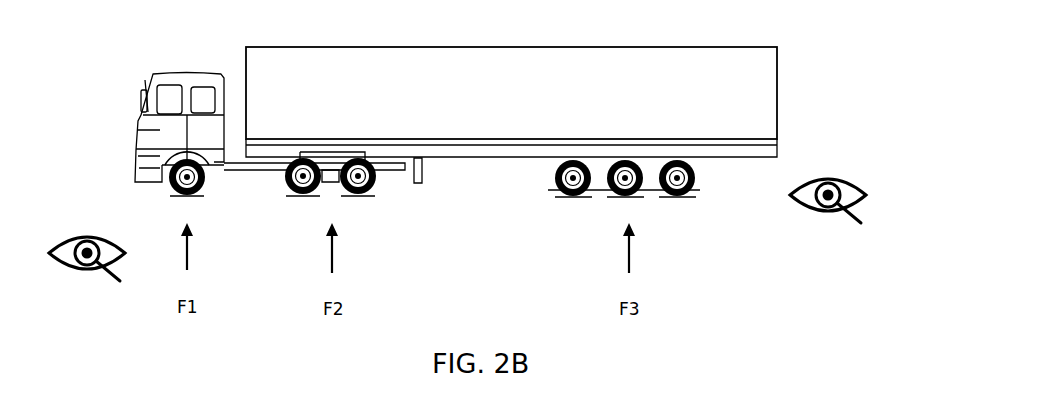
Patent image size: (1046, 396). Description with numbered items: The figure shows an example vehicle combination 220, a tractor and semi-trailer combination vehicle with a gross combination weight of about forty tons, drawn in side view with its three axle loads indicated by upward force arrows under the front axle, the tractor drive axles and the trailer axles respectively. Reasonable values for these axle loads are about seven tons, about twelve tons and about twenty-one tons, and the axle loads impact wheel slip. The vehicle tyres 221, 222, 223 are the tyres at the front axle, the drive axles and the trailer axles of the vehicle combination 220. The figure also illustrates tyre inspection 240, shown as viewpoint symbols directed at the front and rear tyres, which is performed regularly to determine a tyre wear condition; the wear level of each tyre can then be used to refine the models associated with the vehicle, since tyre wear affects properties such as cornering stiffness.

The vehicle combination 220 is at (97, 47).
The vehicle tyre 221 is at (197, 193).
The vehicle tyre 222 is at (373, 195).
The vehicle tyre 223 is at (695, 192).
The tyre inspection 240 is at (170, 192).